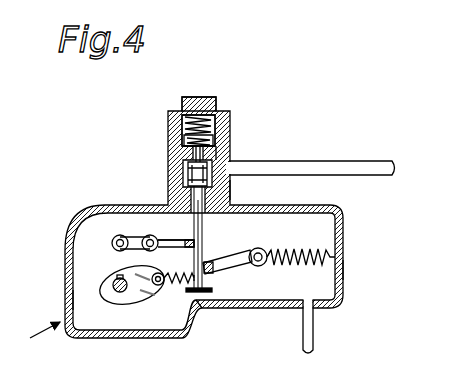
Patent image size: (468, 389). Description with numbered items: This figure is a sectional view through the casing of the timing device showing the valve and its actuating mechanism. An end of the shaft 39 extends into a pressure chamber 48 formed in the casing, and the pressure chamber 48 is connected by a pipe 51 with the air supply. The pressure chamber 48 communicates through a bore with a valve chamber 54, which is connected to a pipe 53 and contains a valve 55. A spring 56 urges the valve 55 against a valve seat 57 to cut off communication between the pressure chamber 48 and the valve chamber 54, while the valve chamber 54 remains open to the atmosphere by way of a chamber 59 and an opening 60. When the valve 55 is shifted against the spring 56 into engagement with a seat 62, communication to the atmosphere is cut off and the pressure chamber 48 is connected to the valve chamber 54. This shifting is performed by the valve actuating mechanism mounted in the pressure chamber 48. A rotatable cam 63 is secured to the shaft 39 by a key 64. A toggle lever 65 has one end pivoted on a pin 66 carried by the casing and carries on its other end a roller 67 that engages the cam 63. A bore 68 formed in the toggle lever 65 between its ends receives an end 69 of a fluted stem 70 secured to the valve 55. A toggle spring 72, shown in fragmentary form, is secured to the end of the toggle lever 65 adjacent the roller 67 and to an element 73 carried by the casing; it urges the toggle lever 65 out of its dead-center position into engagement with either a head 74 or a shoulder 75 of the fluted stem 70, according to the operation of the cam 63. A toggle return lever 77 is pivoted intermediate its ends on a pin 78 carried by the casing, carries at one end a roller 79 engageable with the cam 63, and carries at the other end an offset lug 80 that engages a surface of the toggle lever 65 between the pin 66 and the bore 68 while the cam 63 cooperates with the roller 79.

The shaft 39 is at (100, 285).
The pressure chamber 48 is at (78, 300).
The pipe 51 is at (303, 343).
The pipe 53 is at (320, 161).
The valve chamber 54 is at (186, 170).
The valve 55 is at (227, 153).
The spring 56 is at (192, 100).
The valve seat 57 is at (229, 190).
The chamber 59 is at (172, 123).
The opening 60 is at (178, 139).
The seat 62 is at (170, 152).
The cam 63 is at (135, 318).
The key 64 is at (118, 278).
The toggle lever 65 is at (244, 268).
The pin 66 is at (270, 259).
The roller 67 is at (160, 285).
The bore 68 is at (211, 290).
The end of fluted stem 69 is at (180, 262).
The fluted stem 70 is at (197, 222).
The toggle spring 72 is at (266, 268).
The element 73 is at (343, 268).
The head 74 is at (200, 303).
The shoulder 75 is at (205, 247).
The toggle return lever 77 is at (150, 236).
The pin 78 is at (135, 242).
The roller 79 is at (112, 243).
The lug 80 is at (260, 249).